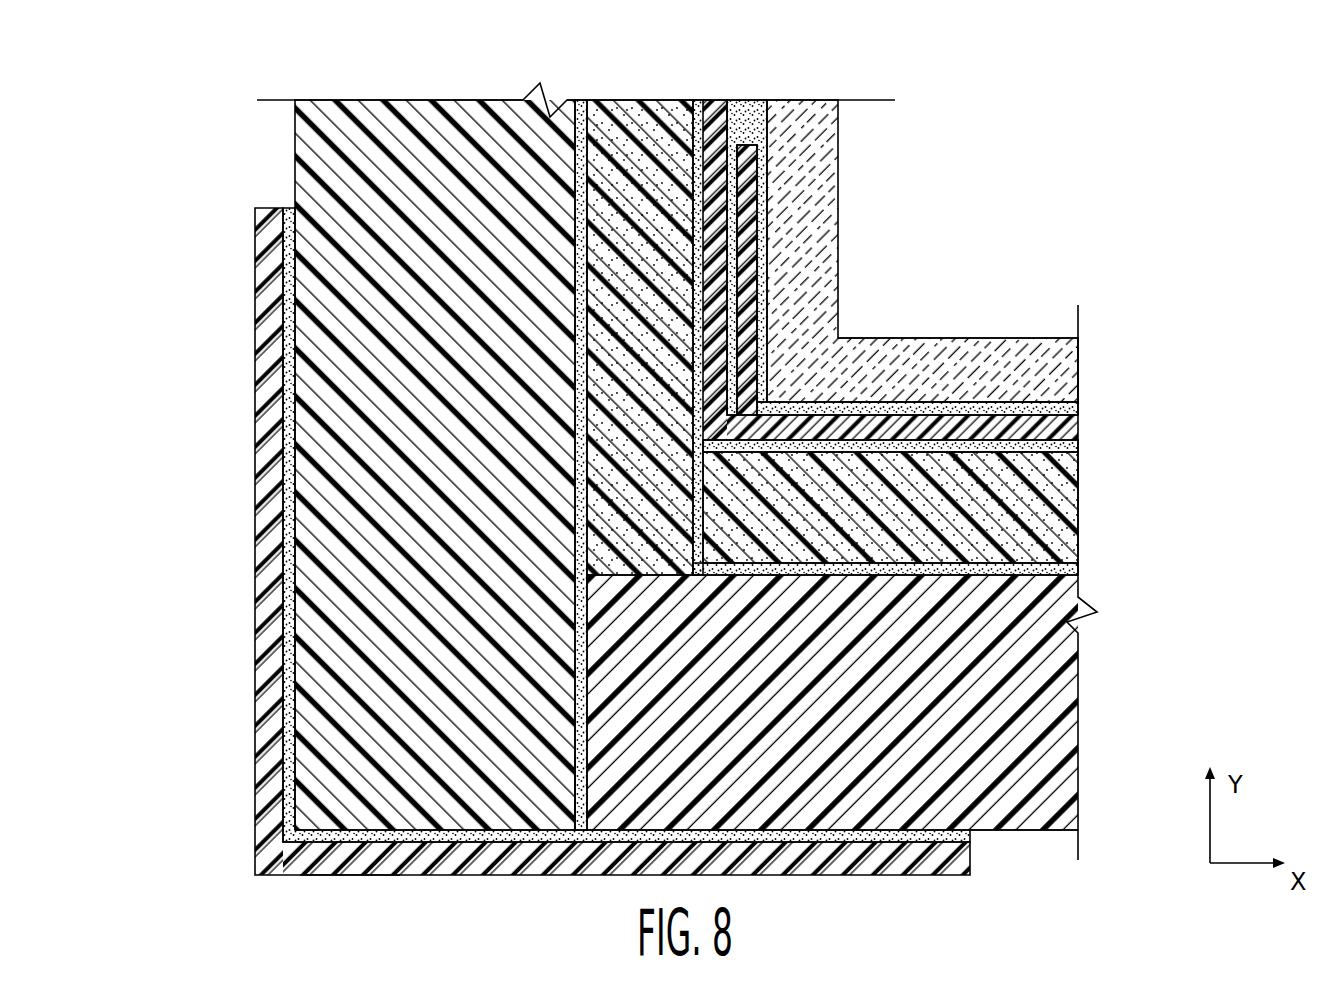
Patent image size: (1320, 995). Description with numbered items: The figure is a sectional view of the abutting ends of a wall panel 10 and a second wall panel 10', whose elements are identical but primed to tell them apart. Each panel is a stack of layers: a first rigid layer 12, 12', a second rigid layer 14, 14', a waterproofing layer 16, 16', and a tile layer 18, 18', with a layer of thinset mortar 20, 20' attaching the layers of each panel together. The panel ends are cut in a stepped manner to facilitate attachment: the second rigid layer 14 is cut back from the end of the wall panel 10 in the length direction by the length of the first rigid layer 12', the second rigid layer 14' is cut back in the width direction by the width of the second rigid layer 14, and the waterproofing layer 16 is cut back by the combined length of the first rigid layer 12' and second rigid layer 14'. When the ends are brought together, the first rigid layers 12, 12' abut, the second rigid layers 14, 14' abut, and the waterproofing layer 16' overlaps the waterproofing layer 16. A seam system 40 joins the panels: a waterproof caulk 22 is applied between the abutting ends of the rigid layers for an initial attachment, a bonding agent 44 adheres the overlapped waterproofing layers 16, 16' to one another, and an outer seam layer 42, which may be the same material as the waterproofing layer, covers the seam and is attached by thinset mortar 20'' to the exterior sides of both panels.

The wall panel 10 is at (533, 98).
The first rigid layer 12 is at (435, 441).
The second rigid layer 14 is at (635, 309).
The waterproofing layer 16 is at (890, 244).
The tile layer 18 is at (922, 251).
The layer of thinset mortar 20 is at (688, 436).
The waterproof caulk 22 is at (703, 510).
The bonding agent 44 is at (755, 222).
The wall panel 10' is at (1046, 870).
The first rigid layer 12' is at (876, 702).
The second rigid layer 14' is at (953, 507).
The waterproofing layer 16' is at (989, 428).
The tile layer 18' is at (1009, 353).
The layer of thinset mortar 20' is at (949, 488).
The thinset mortar 20'' is at (572, 546).
The seam system 40 is at (358, 915).
The outer seam layer 42 is at (258, 448).